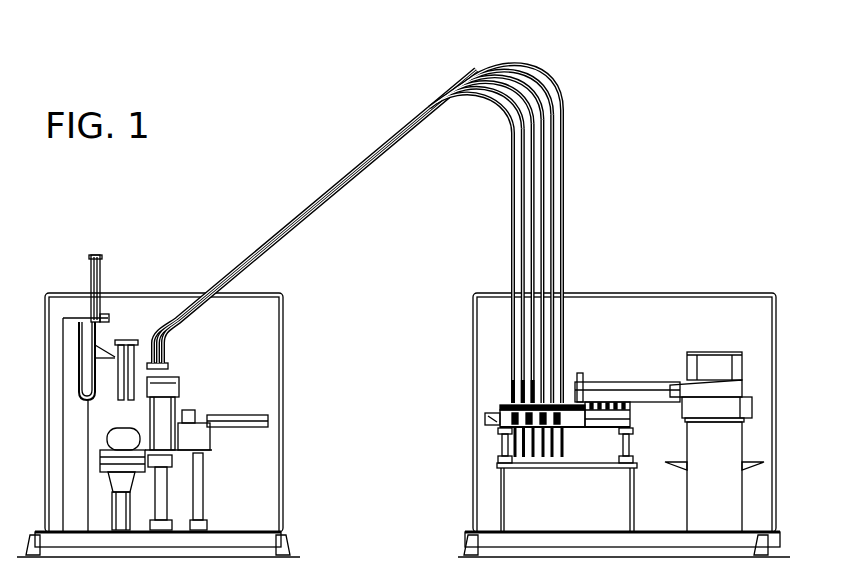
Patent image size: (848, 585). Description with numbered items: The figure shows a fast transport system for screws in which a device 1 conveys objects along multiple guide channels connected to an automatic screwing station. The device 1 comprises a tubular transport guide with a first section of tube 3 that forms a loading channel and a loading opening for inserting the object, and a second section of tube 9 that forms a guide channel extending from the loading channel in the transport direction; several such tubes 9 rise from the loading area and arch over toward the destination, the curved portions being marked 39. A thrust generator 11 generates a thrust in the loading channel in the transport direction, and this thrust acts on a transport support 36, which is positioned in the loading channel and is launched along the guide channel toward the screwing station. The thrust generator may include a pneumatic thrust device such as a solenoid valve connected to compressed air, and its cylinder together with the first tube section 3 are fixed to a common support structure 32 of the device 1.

The device 1 is at (600, 224).
The first section of tube 3 is at (483, 417).
The second section of tube 9 is at (513, 266).
The thrust generator 11 is at (565, 440).
The common support structure 32 is at (540, 472).
The transport support 36 is at (528, 396).
The tube bends 39 is at (533, 63).